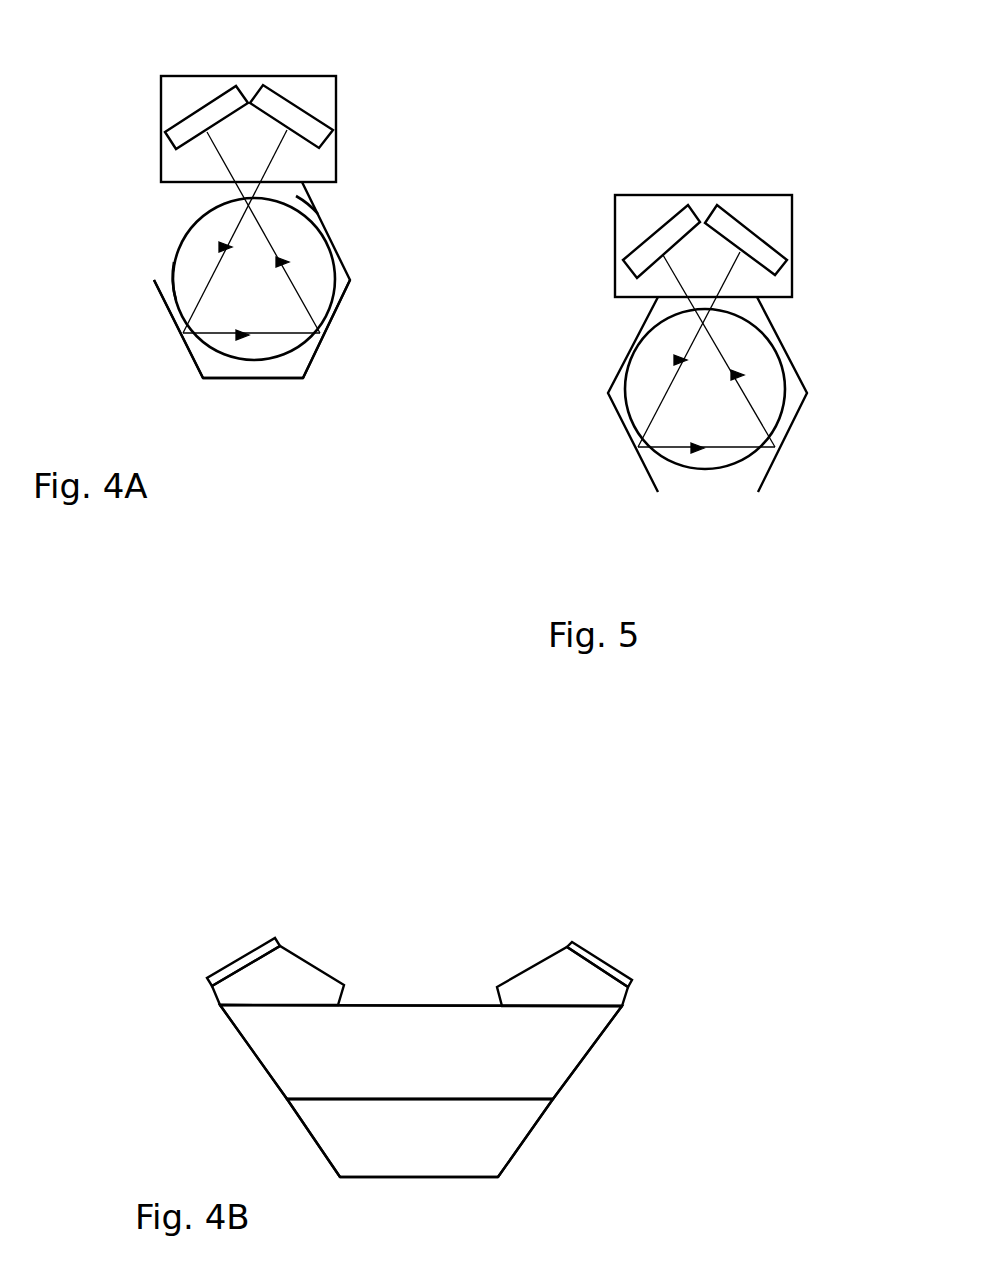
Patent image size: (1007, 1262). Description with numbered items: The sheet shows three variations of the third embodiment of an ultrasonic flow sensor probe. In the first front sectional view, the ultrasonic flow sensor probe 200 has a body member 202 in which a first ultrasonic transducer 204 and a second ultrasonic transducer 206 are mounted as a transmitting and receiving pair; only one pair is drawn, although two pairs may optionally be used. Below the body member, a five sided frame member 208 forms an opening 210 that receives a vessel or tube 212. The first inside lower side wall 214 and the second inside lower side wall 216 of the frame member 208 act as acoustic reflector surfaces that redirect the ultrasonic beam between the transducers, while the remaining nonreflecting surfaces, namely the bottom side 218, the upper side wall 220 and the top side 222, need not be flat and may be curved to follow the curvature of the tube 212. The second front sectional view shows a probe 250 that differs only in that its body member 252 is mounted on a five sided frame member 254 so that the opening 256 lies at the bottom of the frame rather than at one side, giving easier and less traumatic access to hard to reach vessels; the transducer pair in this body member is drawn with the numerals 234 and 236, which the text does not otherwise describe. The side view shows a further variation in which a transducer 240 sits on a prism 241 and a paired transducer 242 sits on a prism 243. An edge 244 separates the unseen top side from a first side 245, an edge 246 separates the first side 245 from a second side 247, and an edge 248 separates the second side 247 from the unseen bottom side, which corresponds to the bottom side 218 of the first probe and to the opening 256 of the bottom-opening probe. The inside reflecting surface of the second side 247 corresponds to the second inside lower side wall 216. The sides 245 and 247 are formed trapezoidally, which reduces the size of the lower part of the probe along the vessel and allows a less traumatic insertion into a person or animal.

In FIG. 4A, the ultrasonic flow sensor probe 200 is at (133, 137).
In FIG. 4A, the body member 202 is at (337, 123).
In FIG. 4A, the first ultrasonic transducer 204 is at (195, 110).
In FIG. 4A, the second ultrasonic transducer 206 is at (292, 107).
In FIG. 4A, the five sided frame member 208 is at (350, 280).
In FIG. 4A, the opening 210 is at (173, 223).
In FIG. 4A, the vessel or tube 212 is at (171, 268).
In FIG. 4A, the first inside lower side wall 214 is at (203, 355).
In FIG. 4A, the second inside lower side wall 216 is at (303, 355).
In FIG. 4A, the bottom side 218 is at (250, 365).
In FIG. 4A, the upper side wall 220 is at (302, 223).
In FIG. 4A, the top side 222 is at (307, 198).
In FIG. 5, the first mirror 234 is at (650, 233).
In FIG. 5, the second mirror 236 is at (747, 227).
In FIG. 4B, the transducer 240 is at (242, 960).
In FIG. 4B, the prism 241 is at (313, 982).
In FIG. 4B, the transducer 242 is at (615, 965).
In FIG. 4B, the prism 243 is at (542, 987).
In FIG. 4B, the edge 244 is at (457, 1008).
In FIG. 4B, the first side 245 is at (475, 1052).
In FIG. 4B, the edge 246 is at (440, 1099).
In FIG. 4B, the second side 247 is at (473, 1138).
In FIG. 4B, the edge 248 is at (440, 1178).
In FIG. 5, the probe 250 is at (590, 298).
In FIG. 5, the body member 252 is at (792, 242).
In FIG. 5, the five sided frame member 254 is at (807, 393).
In FIG. 5, the opening 256 is at (705, 487).